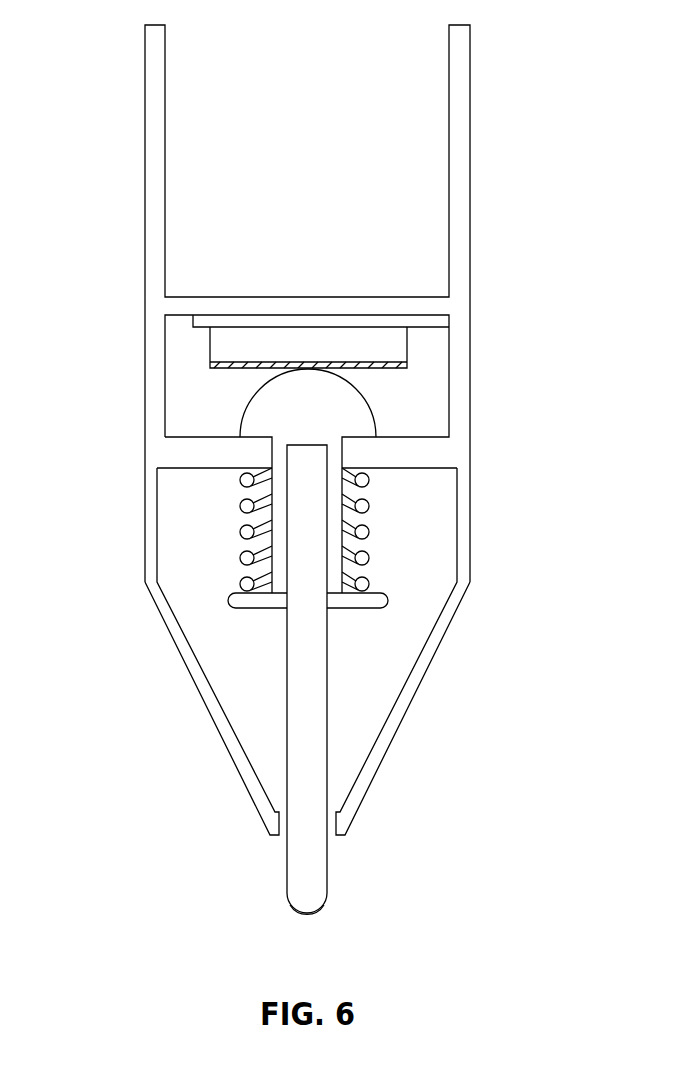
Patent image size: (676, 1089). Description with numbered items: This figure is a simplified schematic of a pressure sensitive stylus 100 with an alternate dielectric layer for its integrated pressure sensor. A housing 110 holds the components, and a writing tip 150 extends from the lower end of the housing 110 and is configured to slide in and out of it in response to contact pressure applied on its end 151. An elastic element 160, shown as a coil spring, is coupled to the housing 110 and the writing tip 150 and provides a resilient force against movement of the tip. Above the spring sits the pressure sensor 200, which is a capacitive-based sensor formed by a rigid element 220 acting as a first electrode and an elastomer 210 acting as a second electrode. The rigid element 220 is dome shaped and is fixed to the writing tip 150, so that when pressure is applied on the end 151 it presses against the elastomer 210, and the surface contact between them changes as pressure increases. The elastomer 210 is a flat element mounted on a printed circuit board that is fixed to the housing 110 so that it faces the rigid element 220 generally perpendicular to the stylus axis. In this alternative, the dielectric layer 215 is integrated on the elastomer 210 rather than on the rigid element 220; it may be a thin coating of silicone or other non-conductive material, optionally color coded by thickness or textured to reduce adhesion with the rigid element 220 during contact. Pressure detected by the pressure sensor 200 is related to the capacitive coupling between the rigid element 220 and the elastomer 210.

The stylus 100 is at (116, 98).
The housing 110 is at (238, 763).
The writing tip 150 is at (286, 858).
The end 151 is at (290, 915).
The elastic element 160 is at (242, 515).
The pressure sensor 200 is at (220, 383).
The elastomer 210 is at (230, 355).
The dielectric layer 215 is at (408, 365).
The rigid element 220 is at (346, 441).